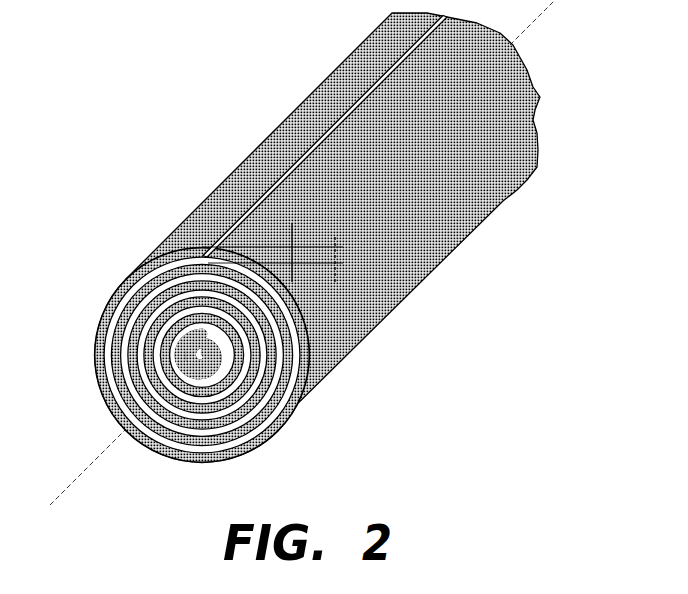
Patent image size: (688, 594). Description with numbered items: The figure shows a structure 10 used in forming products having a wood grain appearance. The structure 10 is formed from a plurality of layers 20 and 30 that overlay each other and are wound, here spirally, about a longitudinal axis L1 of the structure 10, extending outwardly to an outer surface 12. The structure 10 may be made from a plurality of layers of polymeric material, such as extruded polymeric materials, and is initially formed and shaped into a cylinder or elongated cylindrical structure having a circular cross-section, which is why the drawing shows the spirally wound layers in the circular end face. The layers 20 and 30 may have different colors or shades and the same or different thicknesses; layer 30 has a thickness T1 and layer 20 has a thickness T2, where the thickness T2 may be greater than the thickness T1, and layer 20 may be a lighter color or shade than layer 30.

The structure 10 is at (322, 252).
The outer surface 12 is at (330, 88).
The layer 20 is at (110, 322).
The layer 30 is at (113, 358).
The thickness T1 is at (292, 223).
The thickness T2 is at (335, 237).
The longitudinal axis L1 is at (556, 2).